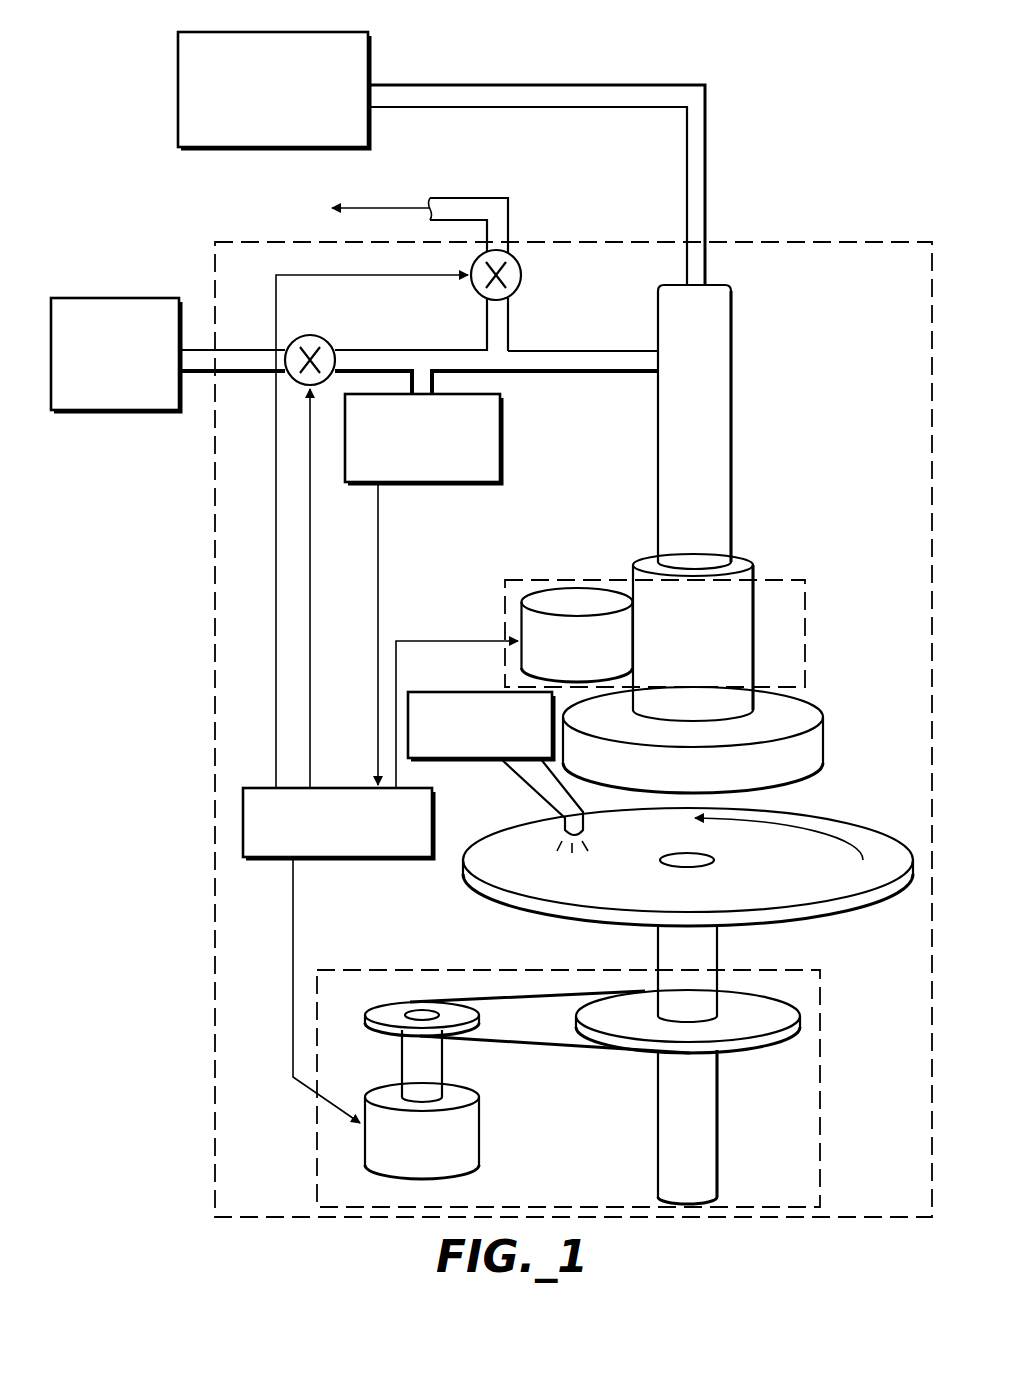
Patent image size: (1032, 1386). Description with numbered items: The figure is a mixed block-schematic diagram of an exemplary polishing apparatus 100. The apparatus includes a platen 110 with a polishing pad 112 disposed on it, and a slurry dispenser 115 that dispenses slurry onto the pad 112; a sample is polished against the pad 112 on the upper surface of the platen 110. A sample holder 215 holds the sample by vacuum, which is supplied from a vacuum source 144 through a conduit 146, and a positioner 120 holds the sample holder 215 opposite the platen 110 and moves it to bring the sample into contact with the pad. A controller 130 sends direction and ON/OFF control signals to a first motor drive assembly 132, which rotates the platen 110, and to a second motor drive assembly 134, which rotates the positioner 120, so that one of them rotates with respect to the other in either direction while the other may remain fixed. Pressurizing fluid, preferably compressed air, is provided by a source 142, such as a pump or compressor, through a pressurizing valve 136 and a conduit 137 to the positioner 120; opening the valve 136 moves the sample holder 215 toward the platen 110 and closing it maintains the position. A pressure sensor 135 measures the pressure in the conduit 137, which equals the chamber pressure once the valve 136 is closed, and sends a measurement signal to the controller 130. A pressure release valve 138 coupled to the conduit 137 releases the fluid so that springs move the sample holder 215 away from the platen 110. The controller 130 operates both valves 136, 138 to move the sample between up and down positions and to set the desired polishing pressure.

The polishing apparatus 100 is at (820, 242).
The platen 110 is at (805, 920).
The polishing pad 112 is at (812, 828).
The slurry dispenser 115 is at (485, 692).
The positioner 120 is at (722, 425).
The controller 130 is at (362, 857).
The first motor drive assembly 132 is at (317, 1140).
The second motor drive assembly 134 is at (590, 580).
The pressure sensor 135 is at (422, 482).
The pressurizing valve 136 is at (318, 336).
The conduit 137 is at (548, 351).
The pressure release valve 138 is at (522, 284).
The pressurizing fluid source 142 is at (152, 298).
The vacuum source 144 is at (278, 32).
The conduit 146 is at (545, 85).
The sample holder 215 is at (810, 788).